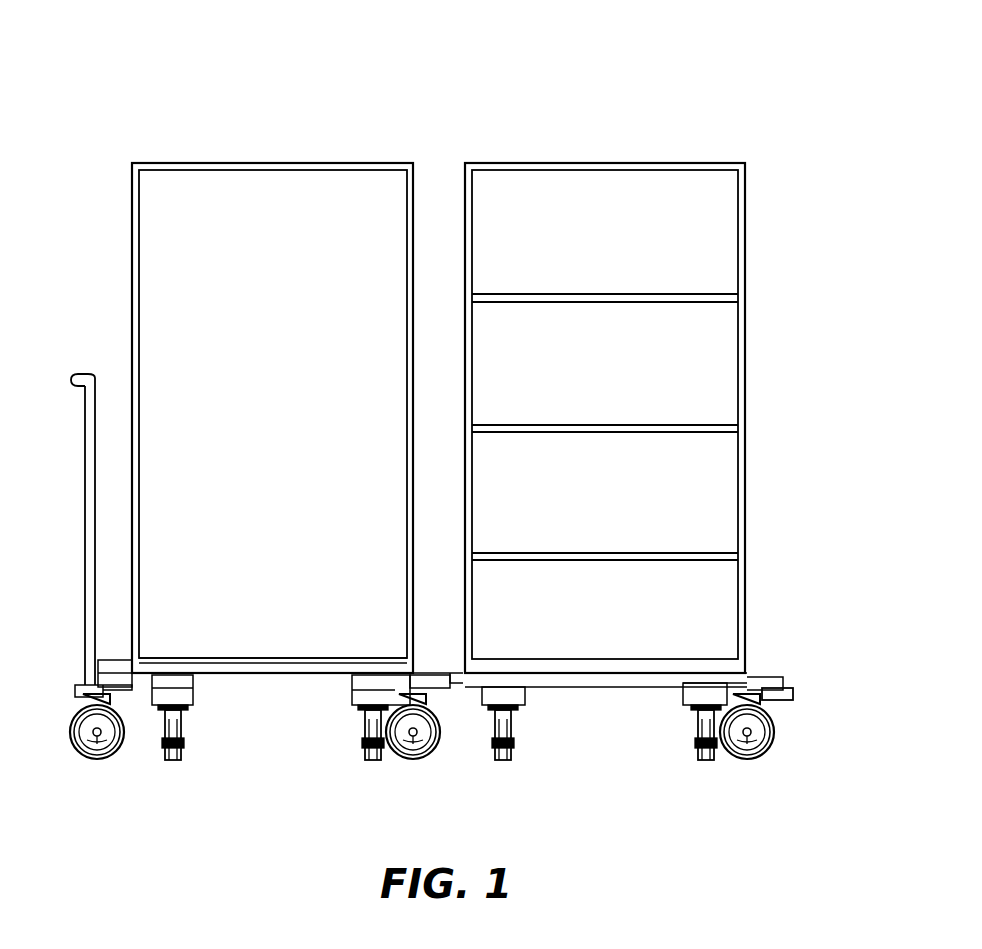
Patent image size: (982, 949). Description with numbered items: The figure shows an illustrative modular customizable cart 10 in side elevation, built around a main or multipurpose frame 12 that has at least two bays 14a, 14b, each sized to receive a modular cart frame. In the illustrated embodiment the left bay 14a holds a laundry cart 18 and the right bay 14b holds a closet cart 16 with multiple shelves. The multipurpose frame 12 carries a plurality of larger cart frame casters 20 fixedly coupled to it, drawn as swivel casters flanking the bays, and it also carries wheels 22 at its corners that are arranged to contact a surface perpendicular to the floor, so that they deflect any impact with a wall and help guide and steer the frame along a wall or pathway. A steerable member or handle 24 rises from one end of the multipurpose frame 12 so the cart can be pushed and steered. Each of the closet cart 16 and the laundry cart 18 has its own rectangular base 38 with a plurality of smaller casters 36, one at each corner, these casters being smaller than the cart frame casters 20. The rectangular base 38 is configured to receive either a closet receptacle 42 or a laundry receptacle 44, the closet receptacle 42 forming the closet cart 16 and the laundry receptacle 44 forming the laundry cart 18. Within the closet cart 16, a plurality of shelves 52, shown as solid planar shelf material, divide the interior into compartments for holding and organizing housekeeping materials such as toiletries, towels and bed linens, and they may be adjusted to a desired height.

The customizable cart 10 is at (146, 84).
The multipurpose frame 12 is at (203, 676).
The bay 14a is at (292, 682).
The bay 14b is at (571, 676).
The closet cart 16 is at (712, 422).
The laundry cart 18 is at (180, 470).
The cart frame casters 20 is at (98, 745).
The wheels 22 is at (793, 695).
The handle 24 is at (84, 418).
The casters 36 is at (505, 760).
The rectangular base 38 is at (632, 676).
The closet receptacle 42 is at (640, 490).
The laundry receptacle 44 is at (178, 564).
The shelves 52 is at (662, 425).